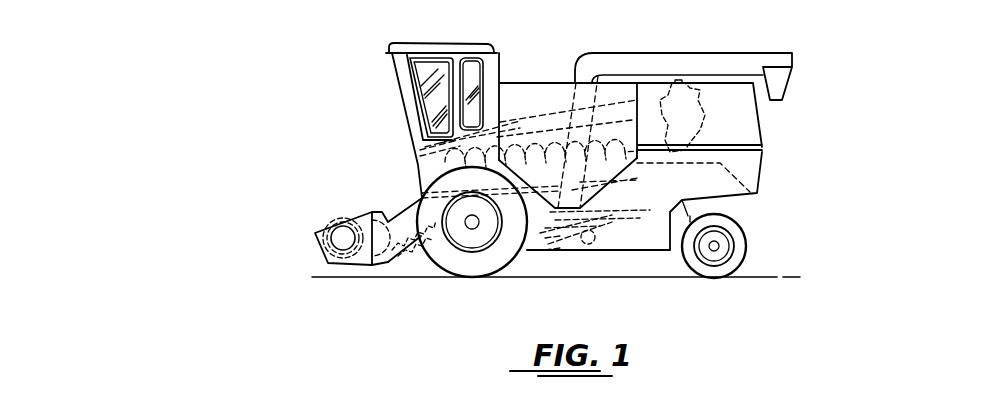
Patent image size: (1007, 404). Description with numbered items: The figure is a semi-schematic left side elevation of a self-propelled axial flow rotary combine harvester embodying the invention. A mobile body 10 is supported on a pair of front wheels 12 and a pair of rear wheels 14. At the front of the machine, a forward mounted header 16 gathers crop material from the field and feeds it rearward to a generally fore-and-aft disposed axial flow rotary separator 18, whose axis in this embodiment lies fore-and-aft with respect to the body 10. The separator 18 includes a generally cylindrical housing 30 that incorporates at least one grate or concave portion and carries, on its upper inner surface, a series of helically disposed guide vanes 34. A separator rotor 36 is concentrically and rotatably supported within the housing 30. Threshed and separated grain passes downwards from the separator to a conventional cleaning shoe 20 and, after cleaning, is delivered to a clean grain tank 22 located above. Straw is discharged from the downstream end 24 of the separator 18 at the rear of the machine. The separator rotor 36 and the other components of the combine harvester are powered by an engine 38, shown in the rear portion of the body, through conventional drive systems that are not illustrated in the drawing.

The mobile body 10 is at (773, 122).
The front wheels 12 is at (450, 265).
The rear wheels 14 is at (747, 237).
The header 16 is at (340, 212).
The axial flow rotary separator 18 is at (413, 177).
The cleaning shoe 20 is at (617, 238).
The clean grain tank 22 is at (513, 82).
The downstream end 24 is at (647, 203).
The housing 30 is at (540, 128).
The guide vanes 34 is at (620, 150).
The separator rotor 36 is at (428, 157).
The engine 38 is at (700, 130).